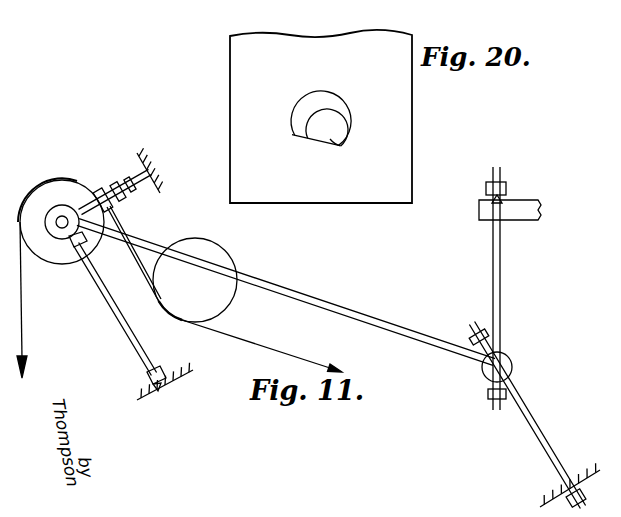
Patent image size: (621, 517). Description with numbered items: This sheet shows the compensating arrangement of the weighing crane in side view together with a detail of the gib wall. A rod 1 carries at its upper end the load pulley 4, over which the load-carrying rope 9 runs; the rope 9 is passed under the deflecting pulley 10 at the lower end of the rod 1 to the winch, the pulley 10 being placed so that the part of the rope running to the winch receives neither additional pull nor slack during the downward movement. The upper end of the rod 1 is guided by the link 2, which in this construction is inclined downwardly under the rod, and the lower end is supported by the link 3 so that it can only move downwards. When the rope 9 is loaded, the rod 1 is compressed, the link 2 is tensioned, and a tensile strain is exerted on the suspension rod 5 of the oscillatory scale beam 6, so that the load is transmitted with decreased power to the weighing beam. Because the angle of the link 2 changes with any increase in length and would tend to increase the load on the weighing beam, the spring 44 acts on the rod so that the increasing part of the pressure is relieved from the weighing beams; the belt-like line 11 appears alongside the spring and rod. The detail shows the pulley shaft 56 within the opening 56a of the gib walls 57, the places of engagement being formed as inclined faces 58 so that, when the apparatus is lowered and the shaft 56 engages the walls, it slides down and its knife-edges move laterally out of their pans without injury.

In FIG. 11, the rod 1 is at (297, 302).
In FIG. 11, the link 2 is at (121, 322).
In FIG. 11, the link 3 is at (528, 419).
In FIG. 11, the load pulley 4 is at (46, 191).
In FIG. 11, the suspension rod 5 is at (502, 295).
In FIG. 11, the scale beam 6 is at (522, 202).
In FIG. 11, the rope 9 is at (24, 318).
In FIG. 11, the deflecting pulley 10 is at (226, 259).
In FIG. 11, the belt 11 is at (147, 276).
In FIG. 11, the spring 44 is at (121, 207).
In FIG. 20, the pulley shaft 56 is at (335, 136).
In FIG. 20, the opening 56a is at (333, 103).
In FIG. 20, the walls 57 is at (313, 104).
In FIG. 20, the inclined faces 58 is at (297, 128).